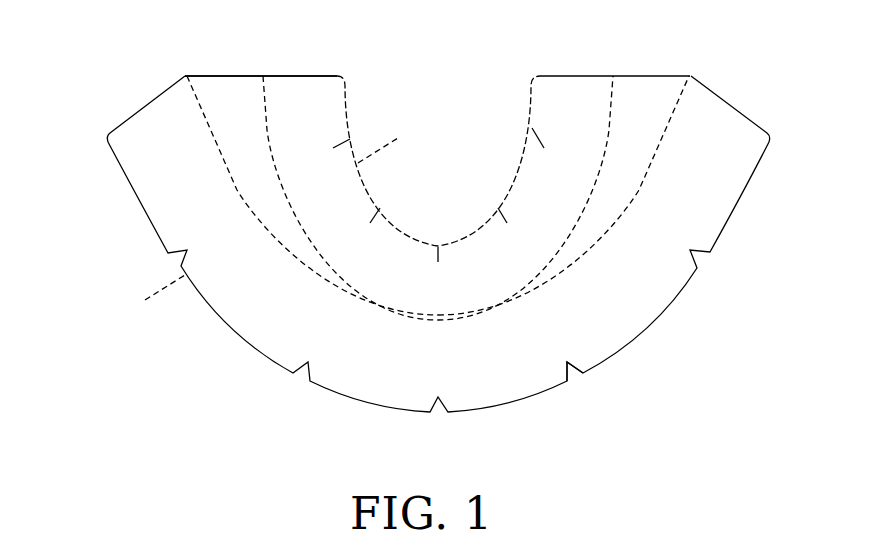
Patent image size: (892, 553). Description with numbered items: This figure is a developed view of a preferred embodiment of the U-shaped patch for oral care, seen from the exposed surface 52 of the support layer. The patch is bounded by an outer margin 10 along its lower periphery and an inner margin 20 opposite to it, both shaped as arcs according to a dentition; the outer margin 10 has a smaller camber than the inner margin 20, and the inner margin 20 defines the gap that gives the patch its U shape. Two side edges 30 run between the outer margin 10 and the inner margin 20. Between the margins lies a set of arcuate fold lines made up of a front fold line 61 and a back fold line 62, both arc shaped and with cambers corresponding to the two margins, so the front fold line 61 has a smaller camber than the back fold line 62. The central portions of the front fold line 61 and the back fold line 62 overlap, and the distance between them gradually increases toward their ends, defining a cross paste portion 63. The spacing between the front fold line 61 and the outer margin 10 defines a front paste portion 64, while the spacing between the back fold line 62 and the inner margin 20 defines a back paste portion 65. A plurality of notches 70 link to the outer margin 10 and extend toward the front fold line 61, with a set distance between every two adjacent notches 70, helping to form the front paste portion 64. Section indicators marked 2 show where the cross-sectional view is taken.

The outer margin 10 is at (230, 327).
The inner margin 20 is at (373, 197).
The side edges 30 is at (167, 92).
The exposed surface 52 is at (129, 128).
The front fold line 61 is at (283, 258).
The back fold line 62 is at (380, 306).
The cross paste portion 63 is at (663, 95).
The front paste portion 64 is at (733, 125).
The back paste portion 65 is at (582, 83).
The notches 70 is at (580, 373).
The section line 2- 2 is at (150, 278).